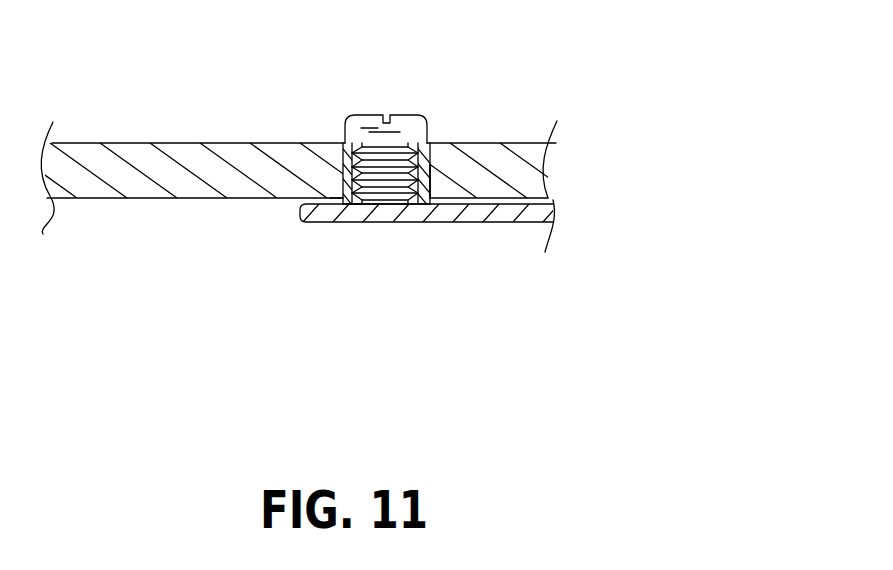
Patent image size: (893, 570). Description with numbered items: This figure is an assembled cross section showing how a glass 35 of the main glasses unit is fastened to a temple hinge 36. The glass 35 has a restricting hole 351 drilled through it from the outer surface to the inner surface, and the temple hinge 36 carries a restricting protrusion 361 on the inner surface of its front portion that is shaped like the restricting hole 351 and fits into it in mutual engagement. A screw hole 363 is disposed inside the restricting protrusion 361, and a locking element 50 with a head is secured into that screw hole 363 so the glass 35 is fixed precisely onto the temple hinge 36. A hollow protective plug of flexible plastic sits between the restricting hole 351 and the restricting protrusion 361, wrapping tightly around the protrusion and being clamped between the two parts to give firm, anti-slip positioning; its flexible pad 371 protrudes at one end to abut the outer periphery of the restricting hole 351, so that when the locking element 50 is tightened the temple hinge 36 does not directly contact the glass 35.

The glass 35 is at (232, 143).
The temple hinge 36 is at (522, 222).
The restricting protrusion 361 is at (428, 165).
The screw hole 363 is at (358, 205).
The flexible pad 371 is at (336, 200).
The restricting hole 351 is at (432, 169).
The locking element 50 is at (359, 93).